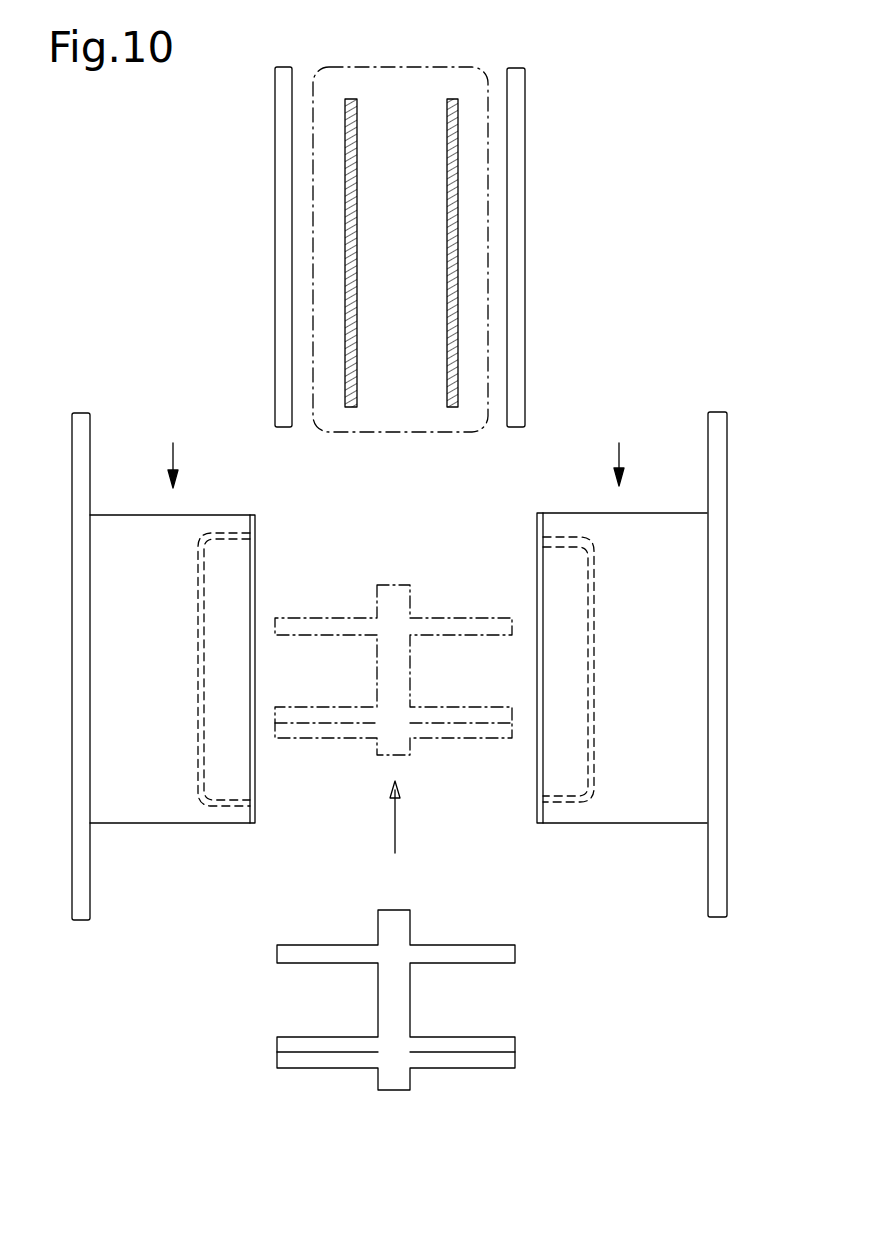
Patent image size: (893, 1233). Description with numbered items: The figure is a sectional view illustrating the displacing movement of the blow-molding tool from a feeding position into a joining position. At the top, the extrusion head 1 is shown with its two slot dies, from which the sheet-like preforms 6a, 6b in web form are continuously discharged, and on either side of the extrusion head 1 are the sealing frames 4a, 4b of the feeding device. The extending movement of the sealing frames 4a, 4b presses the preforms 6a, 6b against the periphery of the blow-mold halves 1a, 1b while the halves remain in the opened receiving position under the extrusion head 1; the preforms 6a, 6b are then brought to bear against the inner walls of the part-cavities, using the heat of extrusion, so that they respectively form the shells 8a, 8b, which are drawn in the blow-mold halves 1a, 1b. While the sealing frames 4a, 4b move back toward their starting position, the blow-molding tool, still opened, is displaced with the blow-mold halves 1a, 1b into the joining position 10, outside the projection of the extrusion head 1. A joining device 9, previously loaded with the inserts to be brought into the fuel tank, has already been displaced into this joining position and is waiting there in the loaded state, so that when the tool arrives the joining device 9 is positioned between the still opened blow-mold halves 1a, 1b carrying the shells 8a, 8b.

The extrusion head 1 is at (416, 84).
The blow-mold half 1a is at (153, 790).
The blow-mold half 1b is at (641, 775).
The sealing frame 4a is at (274, 156).
The sealing frame 4b is at (512, 156).
The preform 6a is at (352, 303).
The preform 6b is at (447, 346).
The shell 8a is at (204, 608).
The shell 8b is at (585, 742).
The joining device 9 is at (338, 740).
The joining position 10 is at (593, 989).